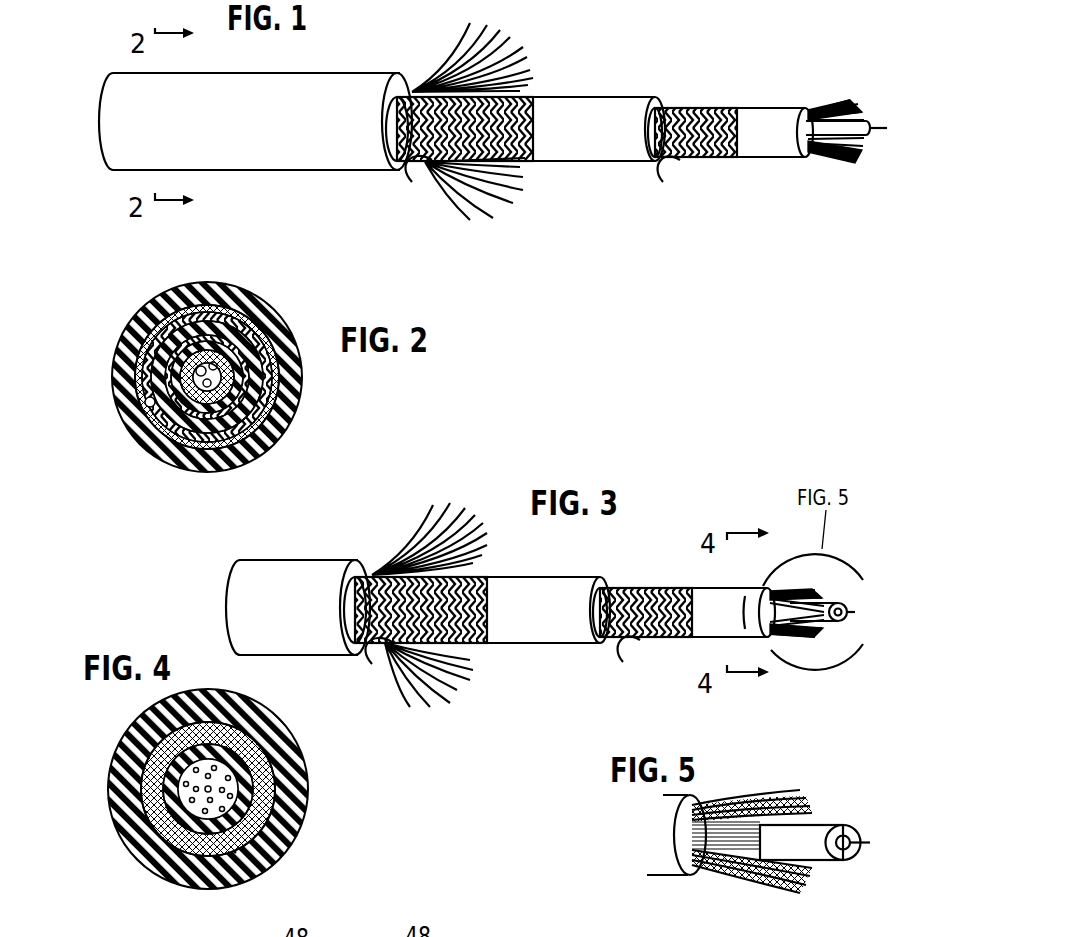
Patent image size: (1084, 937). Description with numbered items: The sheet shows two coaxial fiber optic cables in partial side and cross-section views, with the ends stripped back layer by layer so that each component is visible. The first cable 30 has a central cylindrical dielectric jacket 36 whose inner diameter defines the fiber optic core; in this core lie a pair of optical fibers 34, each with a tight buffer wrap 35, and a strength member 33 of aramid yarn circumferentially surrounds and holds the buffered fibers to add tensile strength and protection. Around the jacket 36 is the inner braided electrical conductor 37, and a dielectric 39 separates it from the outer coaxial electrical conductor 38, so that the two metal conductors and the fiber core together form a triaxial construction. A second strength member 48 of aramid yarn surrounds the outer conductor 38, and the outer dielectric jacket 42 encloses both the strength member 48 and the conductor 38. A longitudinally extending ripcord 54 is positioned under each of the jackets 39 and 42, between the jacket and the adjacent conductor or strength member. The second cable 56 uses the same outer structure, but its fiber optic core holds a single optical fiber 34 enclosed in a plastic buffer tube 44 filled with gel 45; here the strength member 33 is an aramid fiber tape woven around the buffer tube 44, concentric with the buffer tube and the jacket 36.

In FIG. 1, the coaxial optic fiber cable 30 is at (84, 94).
In FIG. 1, the strength member 33 is at (826, 156).
In FIG. 2, the strength member 33 is at (252, 425).
In FIG. 3, the strength member 33 is at (797, 613).
In FIG. 4, the strength member 33 is at (273, 757).
In FIG. 5, the strength member 33 is at (772, 795).
In FIG. 1, the optical fiber 34 is at (878, 137).
In FIG. 2, the optical fiber 34 is at (258, 403).
In FIG. 4, the optical fiber 34 is at (233, 857).
In FIG. 5, the optical fiber 34 is at (868, 850).
In FIG. 1, the tight buffer wrap 35 is at (860, 122).
In FIG. 2, the tight buffer wrap 35 is at (258, 378).
In FIG. 1, the dielectric jacket 36 is at (784, 110).
In FIG. 2, the dielectric jacket 36 is at (260, 345).
In FIG. 3, the dielectric jacket 36 is at (735, 590).
In FIG. 4, the dielectric jacket 36 is at (300, 738).
In FIG. 1, the inner braided electrical conductor 37 is at (705, 106).
In FIG. 2, the inner braided electrical conductor 37 is at (250, 318).
In FIG. 3, the inner braided electrical conductor 37 is at (655, 587).
In FIG. 1, the outer coaxial electrical conductor 38 is at (527, 164).
In FIG. 2, the outer coaxial electrical conductor 38 is at (130, 367).
In FIG. 3, the outer coaxial electrical conductor 38 is at (487, 646).
In FIG. 1, the dielectric 39 is at (601, 163).
In FIG. 2, the dielectric 39 is at (140, 437).
In FIG. 3, the dielectric 39 is at (549, 643).
In FIG. 1, the outer dielectric jacket 42 is at (371, 74).
In FIG. 2, the outer dielectric jacket 42 is at (163, 293).
In FIG. 3, the outer dielectric jacket 42 is at (270, 559).
In FIG. 3, the plastic buffer tube 44 is at (818, 612).
In FIG. 4, the plastic buffer tube 44 is at (227, 787).
In FIG. 5, the plastic buffer tube 44 is at (817, 825).
In FIG. 3, the gel 45 is at (845, 612).
In FIG. 4, the gel 45 is at (210, 790).
In FIG. 5, the gel 45 is at (852, 838).
In FIG. 1, the strength member 48 is at (444, 58).
In FIG. 2, the strength member 48 is at (140, 315).
In FIG. 3, the strength member 48 is at (403, 545).
In FIG. 1, the ripcord 54 is at (420, 186).
In FIG. 2, the ripcord 54 is at (132, 410).
In FIG. 3, the ripcord 54 is at (368, 664).
In FIG. 3, the coaxial fiber optic cable 56 is at (218, 603).